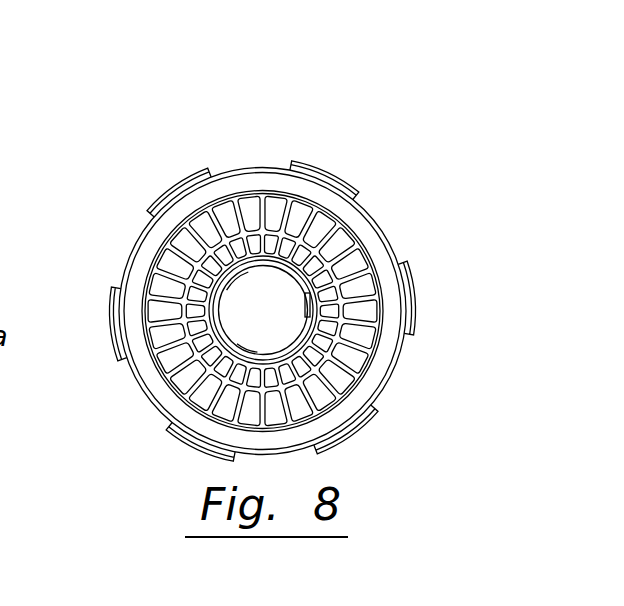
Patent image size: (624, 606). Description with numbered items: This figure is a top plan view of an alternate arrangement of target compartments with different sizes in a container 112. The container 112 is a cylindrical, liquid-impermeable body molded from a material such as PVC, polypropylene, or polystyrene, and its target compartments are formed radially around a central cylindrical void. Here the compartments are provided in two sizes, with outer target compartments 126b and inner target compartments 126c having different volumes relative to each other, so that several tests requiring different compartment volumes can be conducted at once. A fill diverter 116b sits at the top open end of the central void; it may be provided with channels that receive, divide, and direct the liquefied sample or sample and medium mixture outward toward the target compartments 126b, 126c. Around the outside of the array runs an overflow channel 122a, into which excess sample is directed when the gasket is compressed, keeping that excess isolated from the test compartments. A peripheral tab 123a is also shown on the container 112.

The container 112 is at (222, 128).
The fill diverter 116b is at (245, 298).
The overflow channel 122a is at (378, 380).
The tab 123a is at (412, 287).
The target compartment 126b is at (297, 207).
The target compartment 126c is at (313, 258).